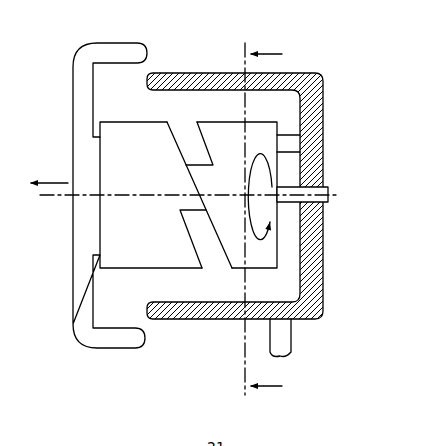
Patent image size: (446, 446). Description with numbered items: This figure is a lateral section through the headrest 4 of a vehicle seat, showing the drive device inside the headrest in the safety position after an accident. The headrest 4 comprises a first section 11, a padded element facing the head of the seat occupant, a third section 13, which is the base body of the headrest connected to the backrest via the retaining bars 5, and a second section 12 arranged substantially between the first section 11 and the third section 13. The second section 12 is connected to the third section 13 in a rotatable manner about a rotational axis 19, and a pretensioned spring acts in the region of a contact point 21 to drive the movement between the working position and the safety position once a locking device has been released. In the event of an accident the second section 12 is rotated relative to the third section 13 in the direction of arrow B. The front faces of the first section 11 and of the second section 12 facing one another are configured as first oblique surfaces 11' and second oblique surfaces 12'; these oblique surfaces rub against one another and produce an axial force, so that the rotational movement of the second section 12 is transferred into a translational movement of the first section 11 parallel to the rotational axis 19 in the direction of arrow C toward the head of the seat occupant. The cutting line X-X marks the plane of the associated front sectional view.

The headrest 4 is at (55, 103).
The first section 11 is at (82, 195).
The first oblique surfaces 11' is at (193, 146).
The second section 12 is at (238, 203).
The second oblique surfaces 12' is at (212, 94).
The third section 13 is at (305, 83).
The contact point 21 is at (288, 142).
The rotational axis 19 is at (338, 195).
The retaining bars 5 is at (281, 341).